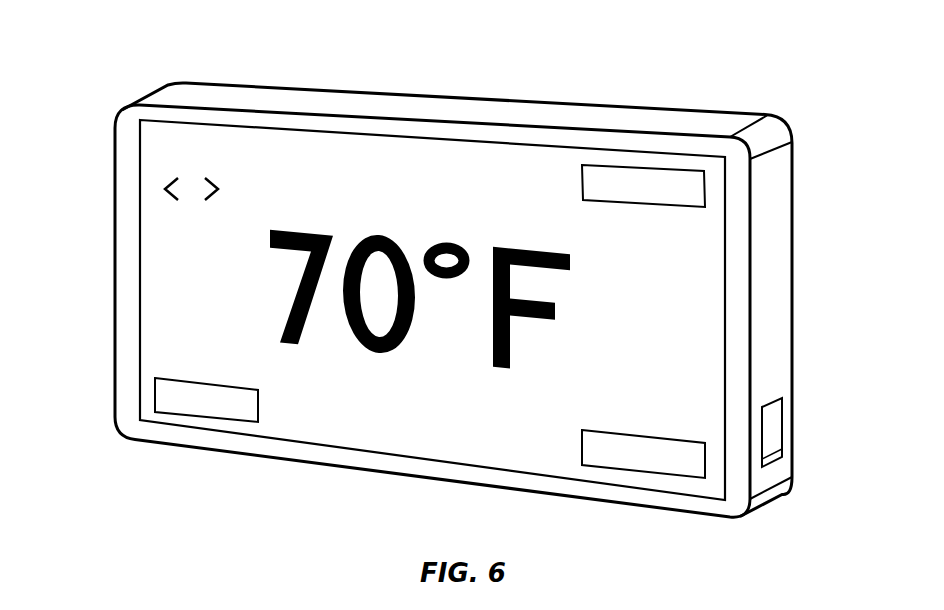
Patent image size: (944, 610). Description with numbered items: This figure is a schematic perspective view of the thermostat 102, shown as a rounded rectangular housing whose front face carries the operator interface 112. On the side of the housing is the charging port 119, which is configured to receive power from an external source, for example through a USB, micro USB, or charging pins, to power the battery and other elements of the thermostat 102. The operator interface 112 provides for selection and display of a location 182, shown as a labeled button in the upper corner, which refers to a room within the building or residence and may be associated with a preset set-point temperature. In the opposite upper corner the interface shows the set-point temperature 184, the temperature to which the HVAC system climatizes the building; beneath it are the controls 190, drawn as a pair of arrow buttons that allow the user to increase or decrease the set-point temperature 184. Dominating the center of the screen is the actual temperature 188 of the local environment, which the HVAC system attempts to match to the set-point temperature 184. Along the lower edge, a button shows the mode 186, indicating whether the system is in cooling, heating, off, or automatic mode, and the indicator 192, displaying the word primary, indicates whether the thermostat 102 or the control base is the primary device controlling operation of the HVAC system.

The thermostat 102 is at (676, 57).
The operator interface 112 is at (695, 330).
The charging port 119 is at (775, 400).
The location 182 is at (643, 167).
The set-point temperature 184 is at (233, 154).
The mode 186 is at (642, 470).
The actual temperature 188 is at (257, 278).
The controls 190 is at (160, 187).
The indicator 192 is at (206, 422).